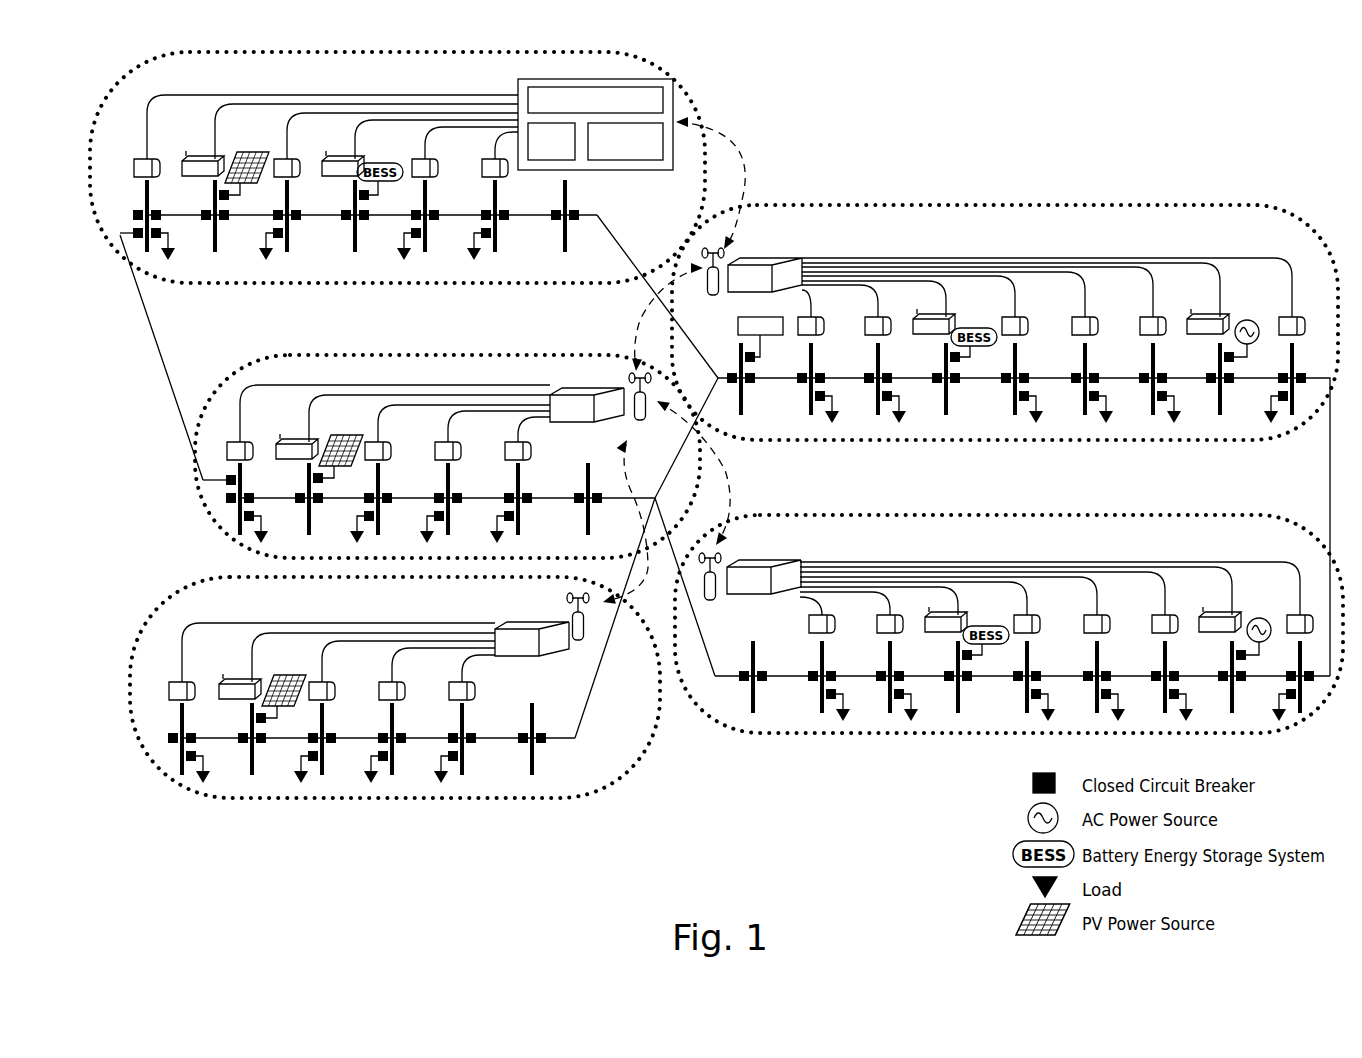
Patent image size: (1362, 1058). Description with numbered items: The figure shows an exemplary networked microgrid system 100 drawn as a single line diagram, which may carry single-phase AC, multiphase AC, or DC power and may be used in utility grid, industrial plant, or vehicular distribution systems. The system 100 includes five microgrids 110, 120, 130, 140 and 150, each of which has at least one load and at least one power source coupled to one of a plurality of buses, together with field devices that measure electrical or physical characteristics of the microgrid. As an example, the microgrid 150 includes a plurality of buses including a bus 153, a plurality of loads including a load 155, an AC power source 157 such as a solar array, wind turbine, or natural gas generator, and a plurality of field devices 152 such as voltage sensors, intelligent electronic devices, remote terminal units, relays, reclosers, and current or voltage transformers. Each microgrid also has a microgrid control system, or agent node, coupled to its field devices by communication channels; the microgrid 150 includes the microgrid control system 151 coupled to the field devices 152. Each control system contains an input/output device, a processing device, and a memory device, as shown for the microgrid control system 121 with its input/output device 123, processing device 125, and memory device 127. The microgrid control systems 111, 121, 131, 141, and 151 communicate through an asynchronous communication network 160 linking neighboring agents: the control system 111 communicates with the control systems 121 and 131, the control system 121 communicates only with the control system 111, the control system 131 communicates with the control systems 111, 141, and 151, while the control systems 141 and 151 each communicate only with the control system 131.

The networked microgrid system 100 is at (1258, 98).
The microgrid 110 is at (1005, 413).
The microgrid control system 111 is at (768, 262).
The microgrid 120 is at (397, 162).
The microgrid control system 121 is at (608, 134).
The input/output device 123 is at (545, 160).
The processing device 125 is at (660, 85).
The memory device 127 is at (618, 160).
The microgrid 130 is at (447, 439).
The microgrid control system 131 is at (604, 410).
The microgrid 140 is at (395, 670).
The microgrid control system 141 is at (548, 660).
The microgrid 150 is at (1009, 617).
The microgrid control system 151 is at (770, 568).
The field devices 152 is at (1128, 553).
The bus 153 is at (958, 716).
The load 155 is at (848, 722).
The AC power source 157 is at (1260, 618).
The asynchronous communication network 160 is at (732, 126).